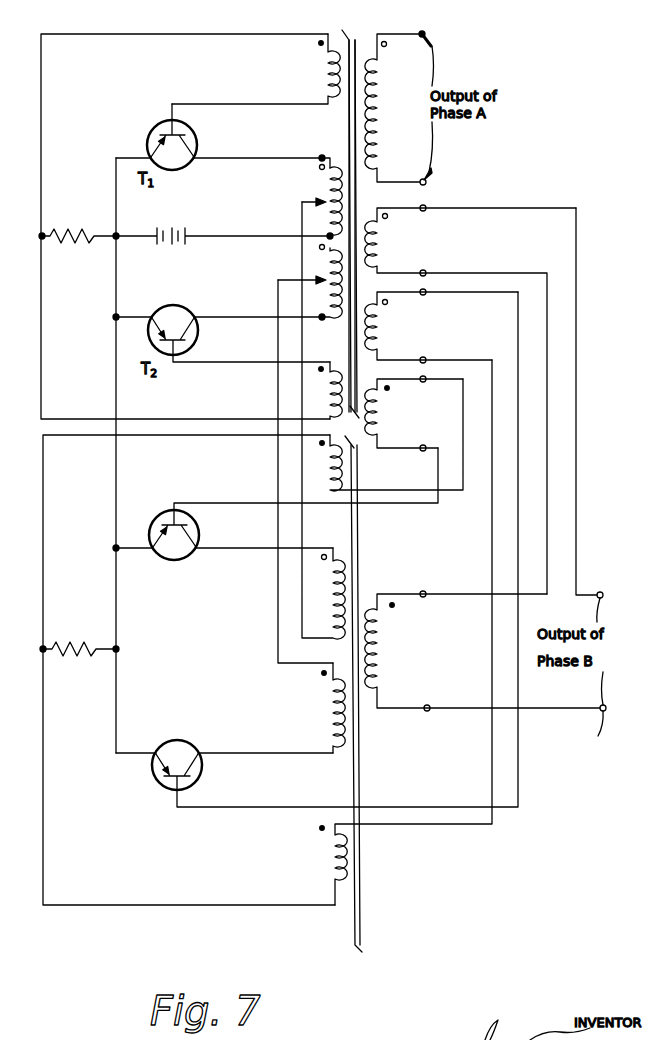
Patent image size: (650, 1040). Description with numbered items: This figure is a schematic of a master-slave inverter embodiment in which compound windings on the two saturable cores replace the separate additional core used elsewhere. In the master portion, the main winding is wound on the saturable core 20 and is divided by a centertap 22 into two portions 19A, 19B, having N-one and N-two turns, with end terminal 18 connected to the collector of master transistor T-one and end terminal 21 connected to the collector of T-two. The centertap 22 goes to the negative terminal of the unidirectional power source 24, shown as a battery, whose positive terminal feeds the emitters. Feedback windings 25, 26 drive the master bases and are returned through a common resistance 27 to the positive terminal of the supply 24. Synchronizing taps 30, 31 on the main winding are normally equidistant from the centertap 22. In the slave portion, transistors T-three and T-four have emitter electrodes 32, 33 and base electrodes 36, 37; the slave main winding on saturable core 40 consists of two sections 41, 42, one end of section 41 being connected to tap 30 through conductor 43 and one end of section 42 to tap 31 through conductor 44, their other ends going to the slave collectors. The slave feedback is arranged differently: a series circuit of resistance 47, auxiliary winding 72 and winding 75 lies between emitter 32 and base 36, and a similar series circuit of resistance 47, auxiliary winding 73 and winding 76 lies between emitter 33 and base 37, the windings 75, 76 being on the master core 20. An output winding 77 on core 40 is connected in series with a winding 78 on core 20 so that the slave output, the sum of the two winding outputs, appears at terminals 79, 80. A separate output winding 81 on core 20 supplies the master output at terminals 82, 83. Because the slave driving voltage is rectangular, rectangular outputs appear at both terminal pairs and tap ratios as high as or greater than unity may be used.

The end terminal 18 is at (321, 156).
The main winding portion 19A is at (325, 183).
The main winding portion 19B is at (321, 250).
The saturable core 20 is at (357, 45).
The end terminal 21 is at (322, 321).
The centertap 22 is at (329, 235).
The unidirectional power source 24 is at (178, 235).
The feedback winding 25 is at (322, 73).
The feedback winding 26 is at (327, 393).
The common resistance 27 is at (75, 233).
The tap terminal 30 is at (319, 202).
The tap terminal 31 is at (318, 276).
The emitter electrode 32 is at (152, 541).
The emitter electrode 33 is at (153, 764).
The base electrode 36 is at (173, 504).
The base electrode 37 is at (180, 808).
The saturable core 40 is at (362, 547).
The main winding section 41 is at (327, 598).
The main winding section 42 is at (327, 702).
The conductor 43 is at (277, 448).
The conductor 44 is at (303, 426).
The common resistance 47 is at (80, 658).
The auxiliary winding 72 is at (327, 472).
The auxiliary winding 73 is at (324, 856).
The winding 75 is at (384, 414).
The winding 76 is at (384, 328).
The output winding 77 is at (388, 654).
The winding 78 is at (383, 241).
The slave output terminal 79 is at (595, 415).
The slave output terminal 80 is at (595, 713).
The output winding 81 is at (387, 81).
The master output terminal 82 is at (425, 33).
The master output terminal 83 is at (430, 183).